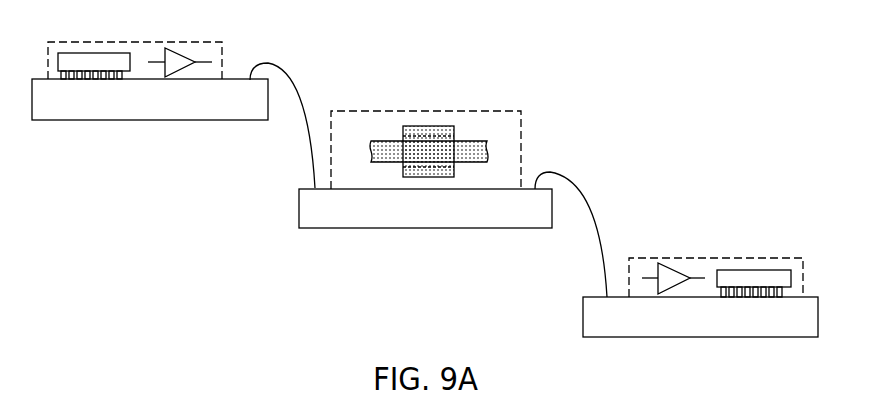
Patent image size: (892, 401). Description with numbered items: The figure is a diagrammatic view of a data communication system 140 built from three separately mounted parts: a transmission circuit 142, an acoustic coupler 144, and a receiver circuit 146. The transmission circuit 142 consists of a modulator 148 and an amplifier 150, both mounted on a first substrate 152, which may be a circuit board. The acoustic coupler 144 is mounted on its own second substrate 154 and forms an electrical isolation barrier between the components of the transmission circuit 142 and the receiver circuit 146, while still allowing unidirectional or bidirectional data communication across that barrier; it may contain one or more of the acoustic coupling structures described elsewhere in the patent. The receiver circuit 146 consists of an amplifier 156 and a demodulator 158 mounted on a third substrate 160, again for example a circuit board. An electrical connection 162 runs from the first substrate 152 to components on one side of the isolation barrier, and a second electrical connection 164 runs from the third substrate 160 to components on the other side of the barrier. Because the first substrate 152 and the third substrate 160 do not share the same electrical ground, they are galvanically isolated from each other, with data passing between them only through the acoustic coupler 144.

The data communication system 140 is at (634, 90).
The transmission circuit 142 is at (225, 58).
The acoustic coupler 144 is at (423, 110).
The receiver circuit 146 is at (628, 277).
The modulator 148 is at (95, 50).
The amplifier 150 is at (177, 52).
The first substrate 152 is at (148, 122).
The second substrate 154 is at (425, 229).
The amplifier 156 is at (665, 263).
The demodulator 158 is at (753, 268).
The third substrate 160 is at (702, 339).
The electrical connection 162 is at (297, 90).
The electrical connection 164 is at (585, 193).